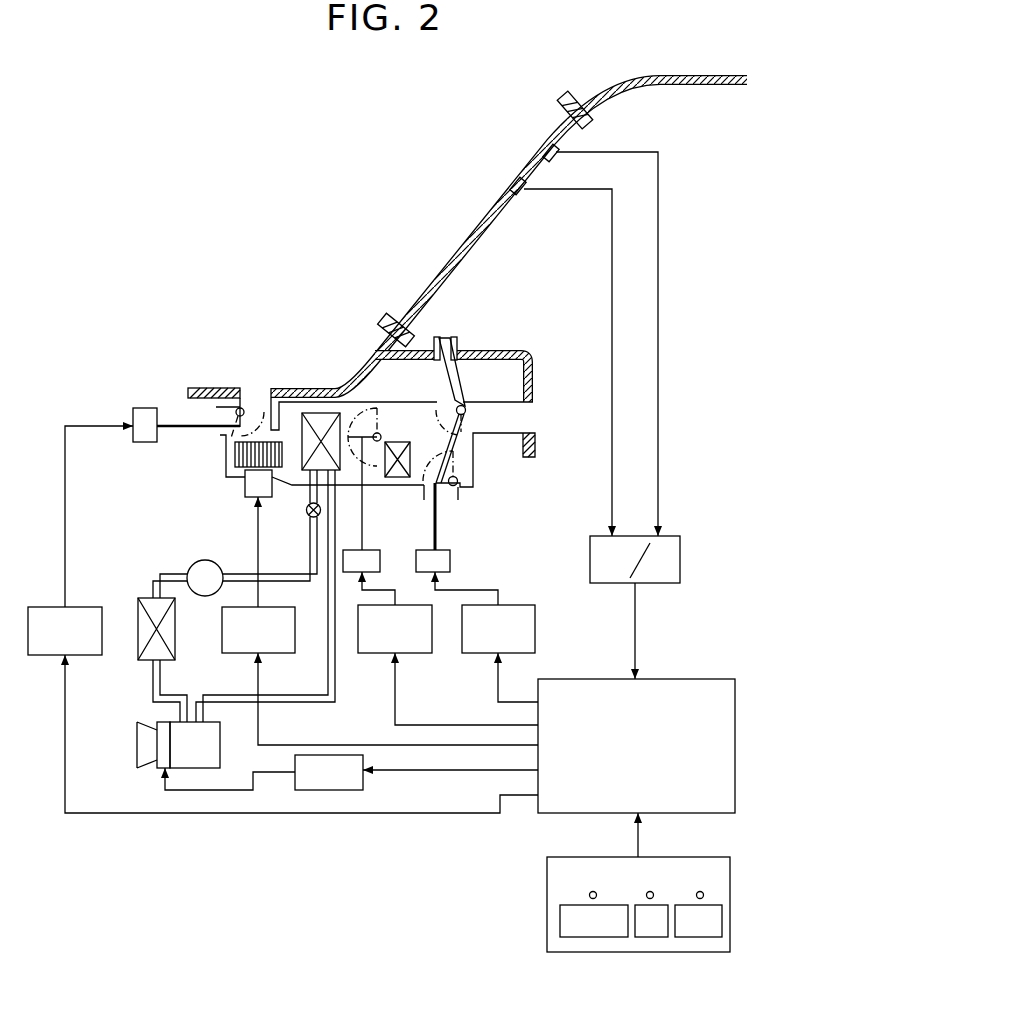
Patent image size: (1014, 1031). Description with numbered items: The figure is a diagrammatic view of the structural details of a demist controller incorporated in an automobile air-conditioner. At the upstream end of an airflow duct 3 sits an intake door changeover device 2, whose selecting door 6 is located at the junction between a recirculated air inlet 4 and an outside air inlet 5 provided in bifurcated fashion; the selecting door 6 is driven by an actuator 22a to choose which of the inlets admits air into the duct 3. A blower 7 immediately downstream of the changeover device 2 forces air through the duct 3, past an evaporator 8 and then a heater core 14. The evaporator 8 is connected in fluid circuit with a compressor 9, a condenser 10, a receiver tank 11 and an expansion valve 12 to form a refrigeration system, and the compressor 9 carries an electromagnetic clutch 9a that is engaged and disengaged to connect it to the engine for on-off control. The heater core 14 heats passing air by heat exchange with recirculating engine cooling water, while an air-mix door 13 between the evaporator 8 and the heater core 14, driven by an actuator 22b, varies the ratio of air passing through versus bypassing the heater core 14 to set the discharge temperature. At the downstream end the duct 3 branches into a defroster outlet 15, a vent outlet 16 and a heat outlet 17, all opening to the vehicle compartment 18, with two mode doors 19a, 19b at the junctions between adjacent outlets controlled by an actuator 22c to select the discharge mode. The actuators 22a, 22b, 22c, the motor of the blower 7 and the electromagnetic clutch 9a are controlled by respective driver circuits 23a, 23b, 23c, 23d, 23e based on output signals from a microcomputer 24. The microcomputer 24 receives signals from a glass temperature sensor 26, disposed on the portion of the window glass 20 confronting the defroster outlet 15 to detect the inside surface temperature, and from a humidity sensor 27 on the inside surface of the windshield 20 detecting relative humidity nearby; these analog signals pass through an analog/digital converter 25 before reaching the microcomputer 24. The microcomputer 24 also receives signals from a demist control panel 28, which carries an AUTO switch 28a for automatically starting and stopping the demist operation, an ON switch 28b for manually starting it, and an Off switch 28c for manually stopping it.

The intake door changeover device 2 is at (249, 394).
The airflow duct 3 is at (406, 402).
The recirculated air inlet 4 is at (222, 435).
The outside air inlet 5 is at (262, 394).
The selecting door 6 is at (237, 406).
The blower 7 is at (242, 458).
The evaporator 8 is at (314, 412).
The compressor 9 is at (220, 755).
The electromagnetic clutch 9a is at (160, 755).
The condenser 10 is at (150, 600).
The receiver tank 11 is at (204, 560).
The expansion valve 12 is at (306, 511).
The air-mix door 13 is at (362, 433).
The heater core 14 is at (400, 478).
The defroster outlet 15 is at (441, 337).
The vent outlet 16 is at (527, 419).
The heat outlet 17 is at (441, 492).
The vehicle compartment 18 is at (678, 97).
The mode door 19a is at (464, 408).
The mode door 19b is at (459, 481).
The window glass 20 is at (458, 252).
The actuator 22a is at (145, 399).
The actuator 22b is at (377, 552).
The actuator 22c is at (452, 559).
The driver circuit 23a is at (90, 655).
The driver circuit 23b is at (372, 653).
The driver circuit 23c is at (474, 653).
The driver circuit 23d is at (235, 653).
The driver circuit 23e is at (363, 784).
The microcomputer 24 is at (582, 690).
The analog/digital converter 25 is at (678, 538).
The glass temperature sensor 26 is at (541, 146).
The humidity sensor 27 is at (509, 183).
The demist control panel 28 is at (563, 863).
The AUTO switch 28a is at (572, 937).
The ON switch 28b is at (651, 937).
The Off switch 28c is at (700, 937).